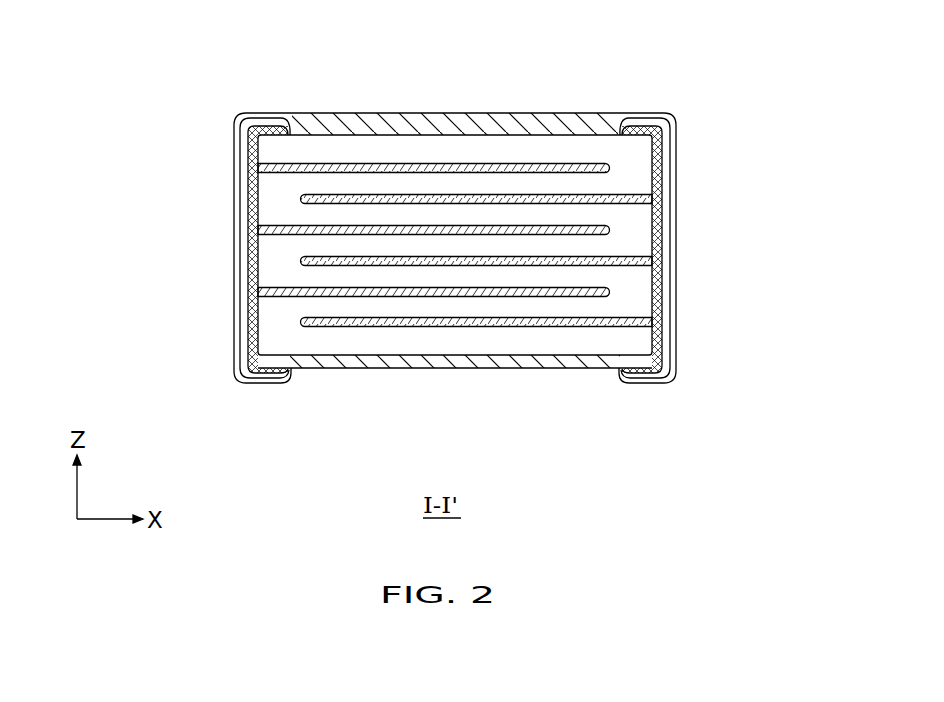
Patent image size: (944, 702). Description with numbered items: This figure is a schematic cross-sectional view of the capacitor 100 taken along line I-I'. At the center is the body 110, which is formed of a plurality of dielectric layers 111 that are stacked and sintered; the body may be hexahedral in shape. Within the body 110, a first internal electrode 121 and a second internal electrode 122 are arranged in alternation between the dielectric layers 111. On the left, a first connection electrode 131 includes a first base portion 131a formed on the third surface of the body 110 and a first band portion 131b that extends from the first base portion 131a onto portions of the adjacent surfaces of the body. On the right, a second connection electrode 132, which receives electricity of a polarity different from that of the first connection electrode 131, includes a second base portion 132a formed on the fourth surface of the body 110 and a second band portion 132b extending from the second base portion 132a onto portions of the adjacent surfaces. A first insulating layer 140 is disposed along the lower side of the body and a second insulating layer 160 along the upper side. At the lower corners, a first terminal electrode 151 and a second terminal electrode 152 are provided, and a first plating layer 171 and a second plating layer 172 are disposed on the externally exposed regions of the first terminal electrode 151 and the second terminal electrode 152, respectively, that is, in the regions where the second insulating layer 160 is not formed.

The capacitor 100 is at (302, 42).
The body 110 is at (441, 135).
The dielectric layer 111 is at (642, 188).
The first internal electrode 121 is at (350, 163).
The second internal electrode 122 is at (532, 194).
The first connection electrode 131 is at (128, 110).
The first base portion 131a is at (246, 163).
The first band portion 131b is at (270, 126).
The second connection electrode 132 is at (782, 110).
The second base portion 132a is at (666, 163).
The second band portion 132b is at (640, 126).
The first insulating layer 140 is at (445, 370).
The second insulating layer 160 is at (622, 118).
The first terminal electrode 151 is at (257, 384).
The second terminal electrode 152 is at (653, 384).
The first plating layer 171 is at (270, 384).
The second plating layer 172 is at (640, 384).